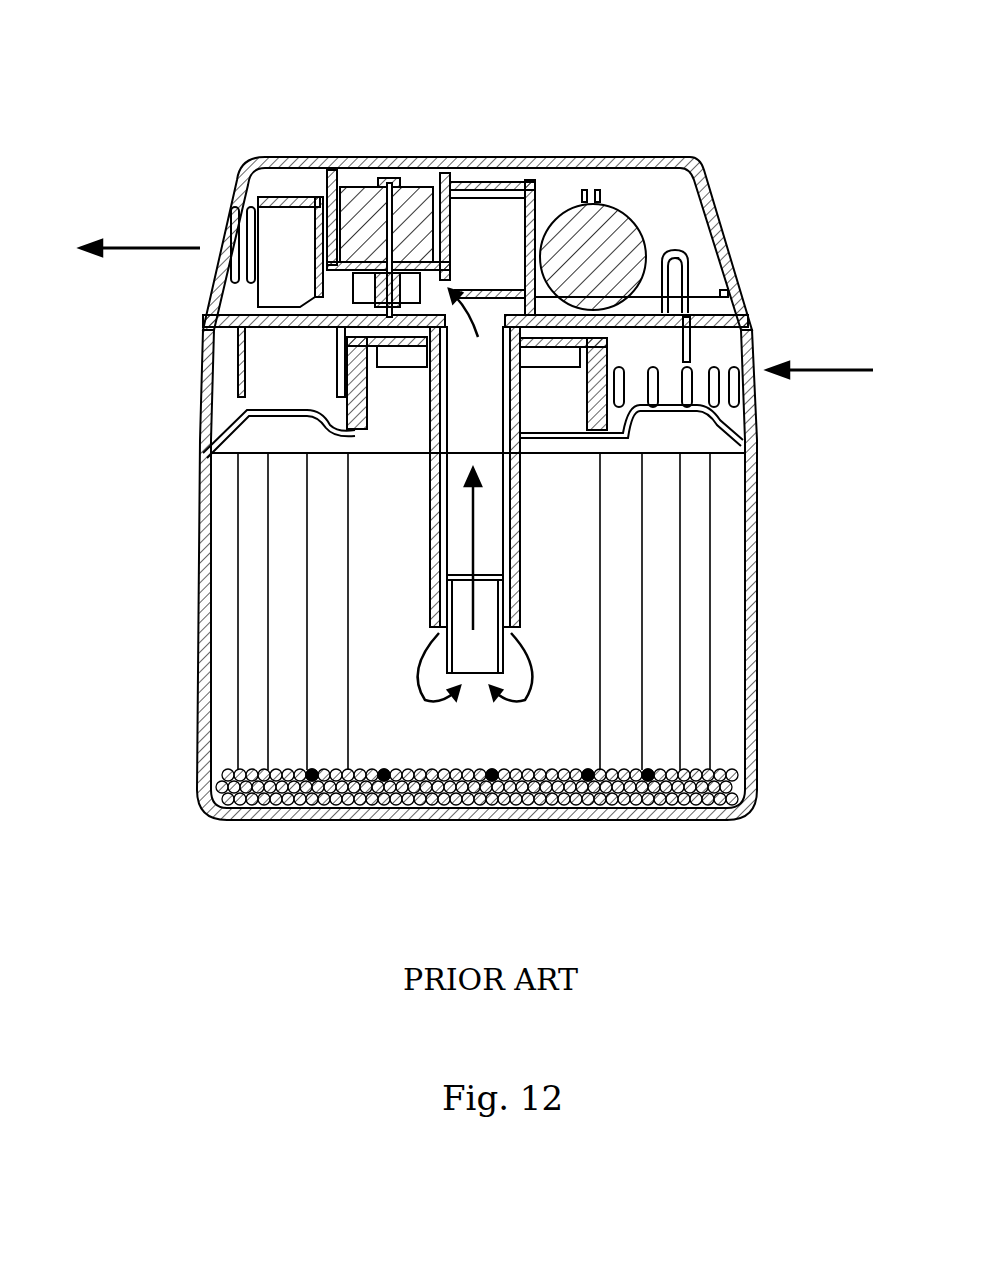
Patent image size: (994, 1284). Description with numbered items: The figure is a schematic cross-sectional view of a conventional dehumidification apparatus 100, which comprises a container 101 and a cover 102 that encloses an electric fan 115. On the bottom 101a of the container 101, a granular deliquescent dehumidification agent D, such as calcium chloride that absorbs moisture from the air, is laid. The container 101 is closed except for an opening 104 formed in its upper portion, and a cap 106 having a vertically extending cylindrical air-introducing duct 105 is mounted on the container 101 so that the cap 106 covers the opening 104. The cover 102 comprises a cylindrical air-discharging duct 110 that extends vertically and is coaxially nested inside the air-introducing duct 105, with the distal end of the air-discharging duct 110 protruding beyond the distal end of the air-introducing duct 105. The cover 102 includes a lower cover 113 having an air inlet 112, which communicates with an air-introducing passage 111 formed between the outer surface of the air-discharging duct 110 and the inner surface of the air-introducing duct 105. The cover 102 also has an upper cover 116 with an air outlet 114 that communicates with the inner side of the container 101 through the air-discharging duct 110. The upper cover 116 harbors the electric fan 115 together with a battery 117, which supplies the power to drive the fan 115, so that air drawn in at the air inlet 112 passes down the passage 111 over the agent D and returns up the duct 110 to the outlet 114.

The dehumidification apparatus 100 is at (732, 50).
The container 101 is at (155, 632).
The bottom 101a is at (420, 818).
The cover 102 is at (143, 330).
The opening 104 is at (595, 415).
The air-introducing duct 105 is at (522, 548).
The cap 106 is at (607, 343).
The air-discharging duct 110 is at (440, 498).
The air-introducing passage 111 is at (445, 533).
The air inlet 112 is at (750, 388).
The lower cover 113 is at (197, 413).
The air outlet 114 is at (227, 210).
The electric fan 115 is at (290, 217).
The upper cover 116 is at (730, 208).
The battery 117 is at (607, 230).
The dehumidification agent D is at (535, 818).